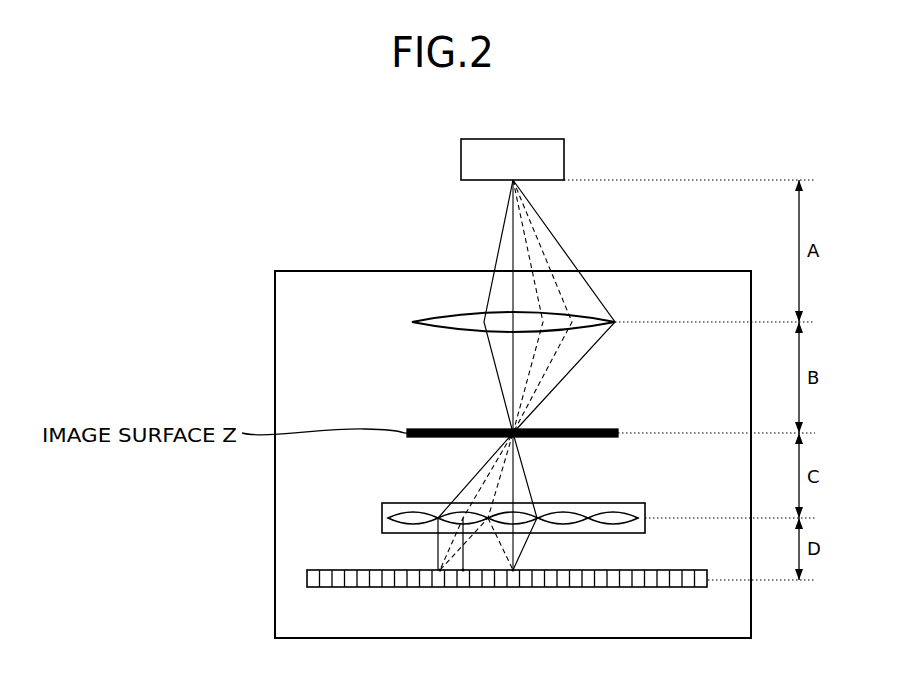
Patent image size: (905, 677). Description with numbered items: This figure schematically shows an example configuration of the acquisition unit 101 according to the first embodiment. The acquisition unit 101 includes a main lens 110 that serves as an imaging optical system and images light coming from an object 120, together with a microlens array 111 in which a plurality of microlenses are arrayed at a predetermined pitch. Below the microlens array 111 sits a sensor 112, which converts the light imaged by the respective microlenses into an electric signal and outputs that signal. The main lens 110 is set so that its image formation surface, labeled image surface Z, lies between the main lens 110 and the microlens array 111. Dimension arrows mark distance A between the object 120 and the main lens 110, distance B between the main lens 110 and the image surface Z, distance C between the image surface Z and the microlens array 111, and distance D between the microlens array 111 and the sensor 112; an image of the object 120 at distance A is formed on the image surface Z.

The acquisition unit 101 is at (275, 617).
The object 120 is at (461, 160).
The main lens 110 is at (412, 322).
The microlens array 111 is at (382, 517).
The sensor 112 is at (307, 576).